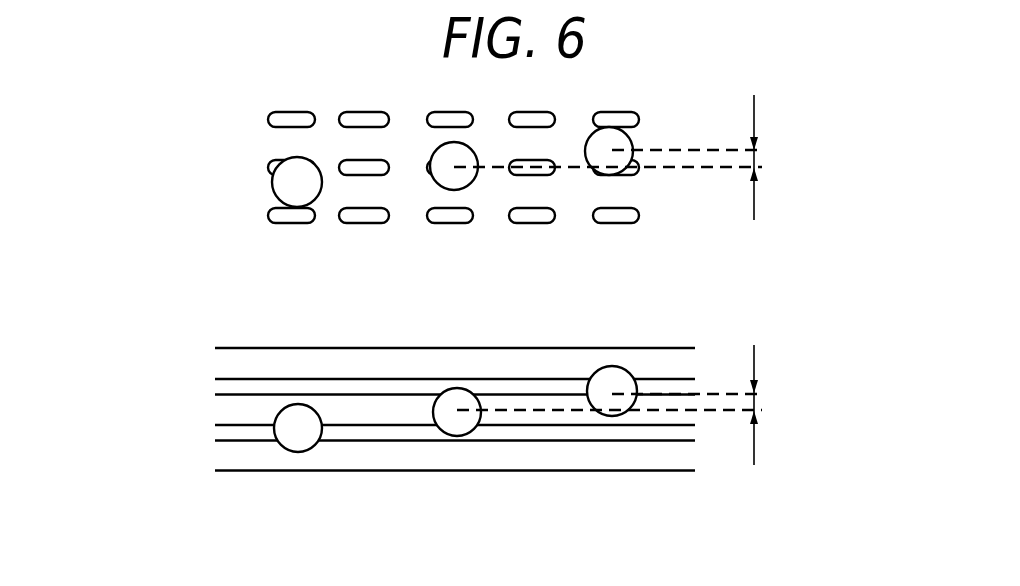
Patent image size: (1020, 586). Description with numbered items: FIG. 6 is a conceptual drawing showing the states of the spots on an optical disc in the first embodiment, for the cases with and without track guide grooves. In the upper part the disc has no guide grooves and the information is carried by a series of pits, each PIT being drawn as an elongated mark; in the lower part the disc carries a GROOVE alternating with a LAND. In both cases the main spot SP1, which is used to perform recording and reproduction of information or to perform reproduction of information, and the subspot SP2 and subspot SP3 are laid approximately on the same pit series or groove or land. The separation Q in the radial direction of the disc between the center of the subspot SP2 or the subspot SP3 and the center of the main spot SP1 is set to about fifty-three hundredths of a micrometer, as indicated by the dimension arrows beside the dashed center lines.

The pit PIT is at (268, 119).
The land LAND is at (222, 452).
The groove GROOVE is at (234, 387).
The main spot SP1 is at (470, 184).
The subspot SP2 is at (587, 160).
The subspot SP3 is at (303, 405).
The separation Q is at (678, 280).